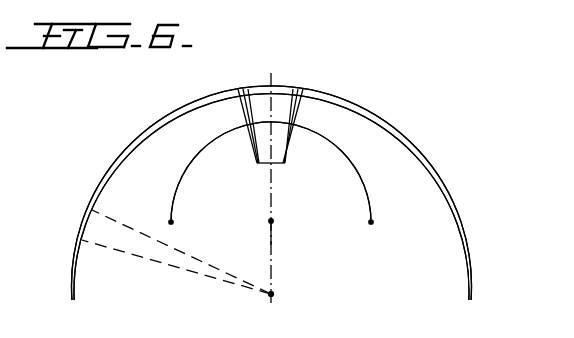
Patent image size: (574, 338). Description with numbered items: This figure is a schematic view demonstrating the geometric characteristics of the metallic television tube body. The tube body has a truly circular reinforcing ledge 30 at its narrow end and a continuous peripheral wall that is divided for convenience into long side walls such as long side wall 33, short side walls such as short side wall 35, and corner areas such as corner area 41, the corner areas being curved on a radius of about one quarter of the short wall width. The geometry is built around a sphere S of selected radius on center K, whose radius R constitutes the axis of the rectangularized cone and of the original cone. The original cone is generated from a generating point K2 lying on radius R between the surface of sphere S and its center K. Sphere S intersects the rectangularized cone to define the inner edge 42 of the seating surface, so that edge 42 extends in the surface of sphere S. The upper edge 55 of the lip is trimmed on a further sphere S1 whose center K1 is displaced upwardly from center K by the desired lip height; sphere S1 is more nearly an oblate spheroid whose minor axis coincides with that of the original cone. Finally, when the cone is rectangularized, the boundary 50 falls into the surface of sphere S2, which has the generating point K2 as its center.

The reinforcing ledge 30 is at (268, 110).
The long side wall 33 is at (249, 87).
The short side wall 35 is at (243, 87).
The corner area 41 is at (237, 88).
The inner edge of seating surface 42 is at (417, 164).
The boundary 50 is at (347, 150).
The upper edge of lip 55 is at (434, 179).
The sphere S is at (441, 196).
The sphere S1 is at (425, 168).
The sphere S2 is at (368, 198).
The center of sphere K is at (268, 298).
The center of sphere S1 K1 is at (273, 293).
The generating point K2 is at (273, 222).
The radius of the sphere R is at (271, 245).